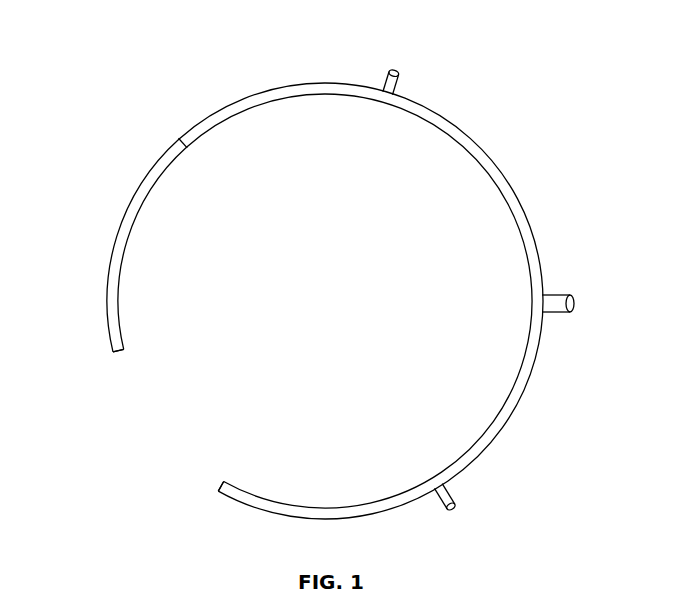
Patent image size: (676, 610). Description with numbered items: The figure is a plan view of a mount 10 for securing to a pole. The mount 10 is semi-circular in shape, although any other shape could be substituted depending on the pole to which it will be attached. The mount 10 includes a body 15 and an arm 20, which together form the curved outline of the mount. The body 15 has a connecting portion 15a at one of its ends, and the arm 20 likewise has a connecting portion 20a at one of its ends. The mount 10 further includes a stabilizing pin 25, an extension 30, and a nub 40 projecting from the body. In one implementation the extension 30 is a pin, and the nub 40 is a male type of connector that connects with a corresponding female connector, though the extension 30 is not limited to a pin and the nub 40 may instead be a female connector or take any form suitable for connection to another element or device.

The mount 10 is at (330, 303).
The body 15 is at (517, 213).
The connecting portion 15a is at (212, 520).
The arm 20 is at (123, 218).
The connecting portion 20a is at (112, 375).
The stabilizing pin 25 is at (454, 495).
The extension 30 is at (401, 80).
The nub 40 is at (558, 313).